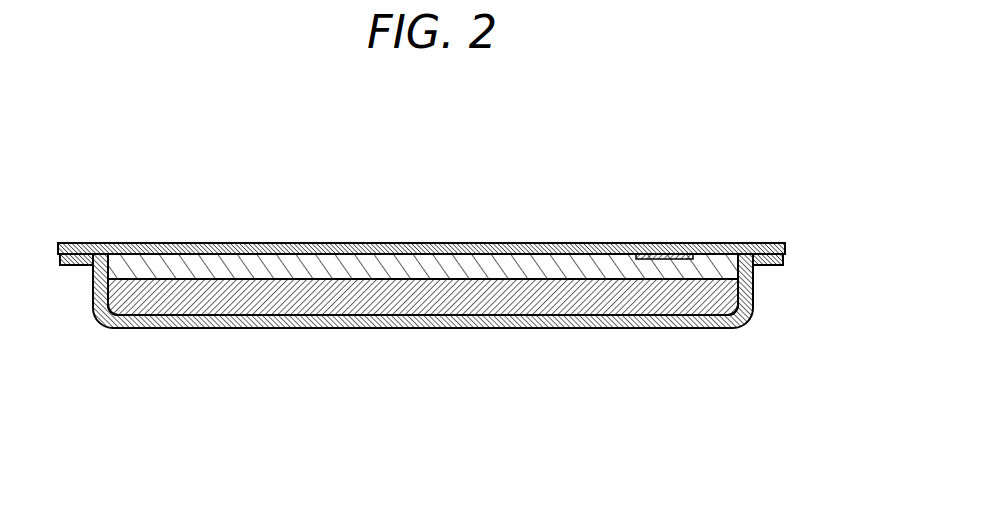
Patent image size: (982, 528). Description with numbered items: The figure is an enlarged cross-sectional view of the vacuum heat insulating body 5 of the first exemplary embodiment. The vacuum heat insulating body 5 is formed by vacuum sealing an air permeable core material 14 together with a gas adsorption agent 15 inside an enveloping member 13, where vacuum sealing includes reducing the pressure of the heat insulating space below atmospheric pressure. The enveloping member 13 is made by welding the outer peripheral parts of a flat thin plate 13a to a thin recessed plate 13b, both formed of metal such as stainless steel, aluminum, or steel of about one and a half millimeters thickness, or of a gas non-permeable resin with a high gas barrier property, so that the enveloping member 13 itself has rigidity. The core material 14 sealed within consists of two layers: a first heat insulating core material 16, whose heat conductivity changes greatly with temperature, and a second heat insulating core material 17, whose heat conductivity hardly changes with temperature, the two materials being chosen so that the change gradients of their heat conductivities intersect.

The vacuum heat insulating body 5 is at (393, 200).
The enveloping member 13 is at (421, 265).
The flat thin plate 13a is at (543, 250).
The thin recessed plate 13b is at (540, 317).
The core material 14 is at (423, 266).
The gas adsorption agent 15 is at (678, 250).
The first heat insulating core material 16 is at (277, 270).
The second heat insulating core material 17 is at (298, 297).